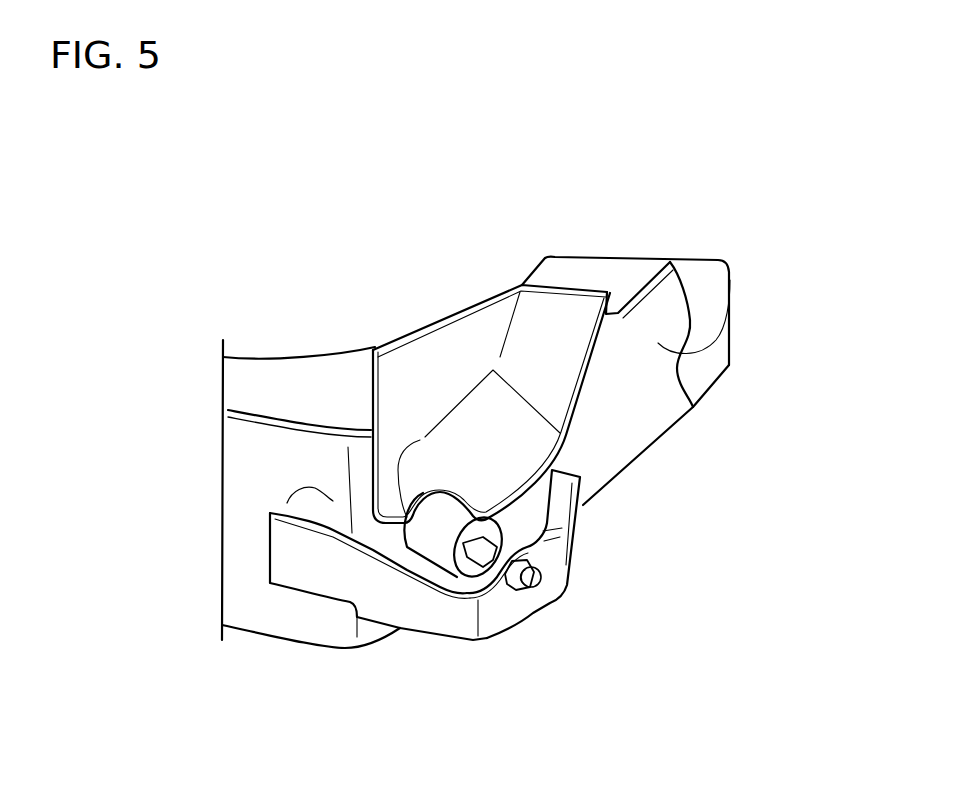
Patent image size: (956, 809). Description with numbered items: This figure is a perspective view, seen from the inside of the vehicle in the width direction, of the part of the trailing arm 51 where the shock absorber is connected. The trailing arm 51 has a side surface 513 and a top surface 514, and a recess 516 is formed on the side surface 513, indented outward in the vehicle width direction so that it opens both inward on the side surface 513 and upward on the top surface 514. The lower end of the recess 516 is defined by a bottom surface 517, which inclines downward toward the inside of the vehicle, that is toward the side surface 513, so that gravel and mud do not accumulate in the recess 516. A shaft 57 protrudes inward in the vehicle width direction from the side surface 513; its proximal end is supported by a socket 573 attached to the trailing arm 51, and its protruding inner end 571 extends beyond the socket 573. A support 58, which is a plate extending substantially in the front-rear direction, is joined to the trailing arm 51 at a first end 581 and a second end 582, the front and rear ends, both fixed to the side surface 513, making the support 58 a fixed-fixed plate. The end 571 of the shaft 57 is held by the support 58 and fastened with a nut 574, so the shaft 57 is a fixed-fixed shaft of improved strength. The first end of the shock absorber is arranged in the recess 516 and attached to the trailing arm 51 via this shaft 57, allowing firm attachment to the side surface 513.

The trailing arm 51 is at (672, 347).
The side surface 513 is at (735, 308).
The top surface 514 is at (600, 250).
The recess 516 is at (533, 358).
The bottom surface 517 is at (420, 440).
The shaft 57 is at (364, 607).
The end of the shaft 571 is at (530, 585).
The socket 573 is at (433, 527).
The nut 574 is at (513, 590).
The support 58 is at (474, 542).
The first end 581 is at (577, 498).
The second end 582 is at (300, 563).